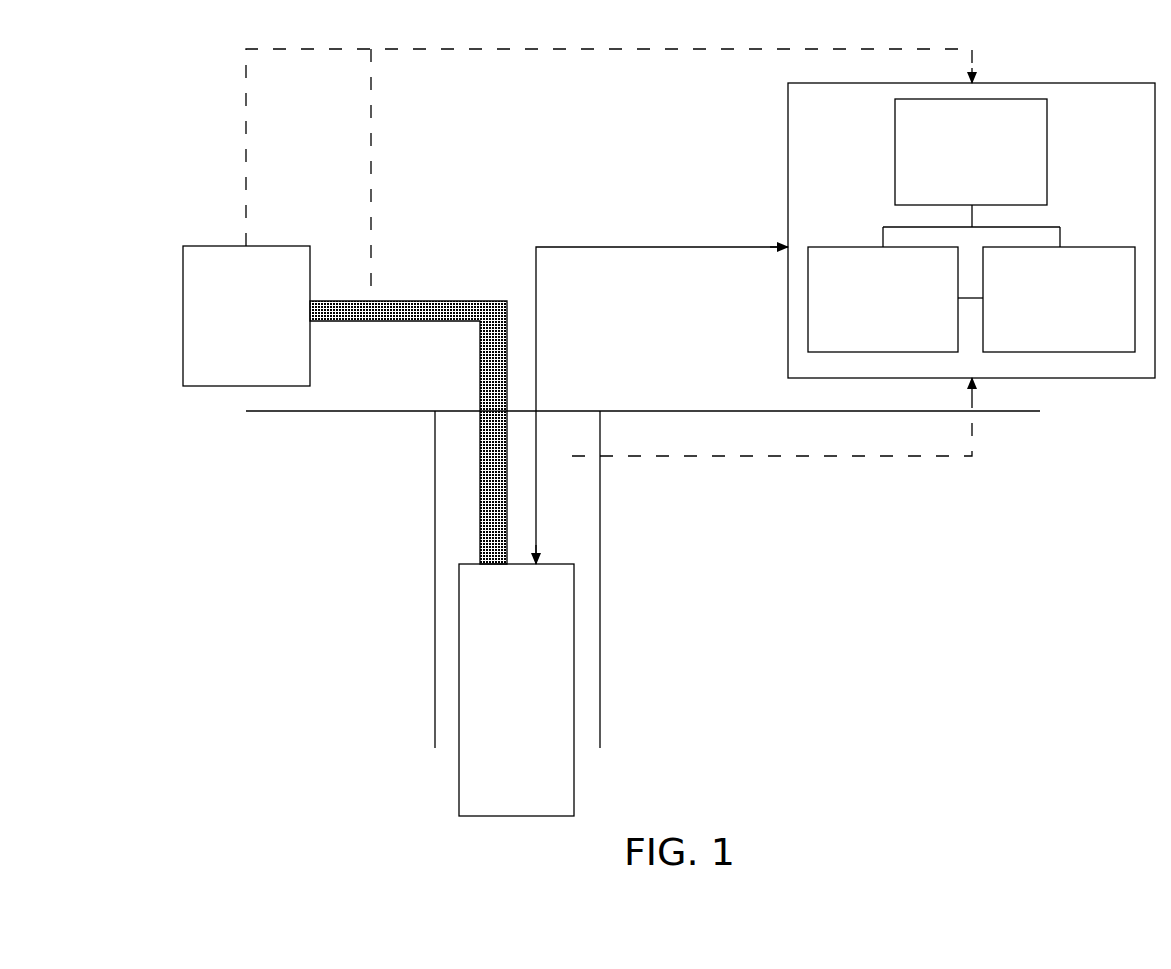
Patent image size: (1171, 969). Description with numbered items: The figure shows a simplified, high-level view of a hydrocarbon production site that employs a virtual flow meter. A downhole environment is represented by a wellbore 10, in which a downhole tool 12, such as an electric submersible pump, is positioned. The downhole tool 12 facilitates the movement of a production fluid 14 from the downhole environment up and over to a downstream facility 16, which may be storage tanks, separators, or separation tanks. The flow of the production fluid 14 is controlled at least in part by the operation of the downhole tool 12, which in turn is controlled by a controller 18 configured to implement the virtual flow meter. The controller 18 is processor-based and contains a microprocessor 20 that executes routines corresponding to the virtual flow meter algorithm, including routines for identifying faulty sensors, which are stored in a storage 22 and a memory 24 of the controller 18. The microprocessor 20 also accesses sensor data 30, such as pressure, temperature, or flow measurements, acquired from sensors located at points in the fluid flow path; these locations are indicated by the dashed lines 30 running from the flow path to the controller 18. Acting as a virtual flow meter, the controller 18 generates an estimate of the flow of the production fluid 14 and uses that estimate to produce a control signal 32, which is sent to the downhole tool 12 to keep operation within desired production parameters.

The wellbore 10 is at (446, 519).
The downhole tool 12 is at (470, 688).
The production fluid 14 is at (450, 300).
The downstream facility 16 is at (208, 245).
The controller 18 is at (790, 105).
The microprocessor 20 is at (1013, 98).
The storage 22 is at (1100, 246).
The memory 24 is at (843, 246).
The sensor data 30 is at (463, 55).
The control signal 32 is at (660, 246).